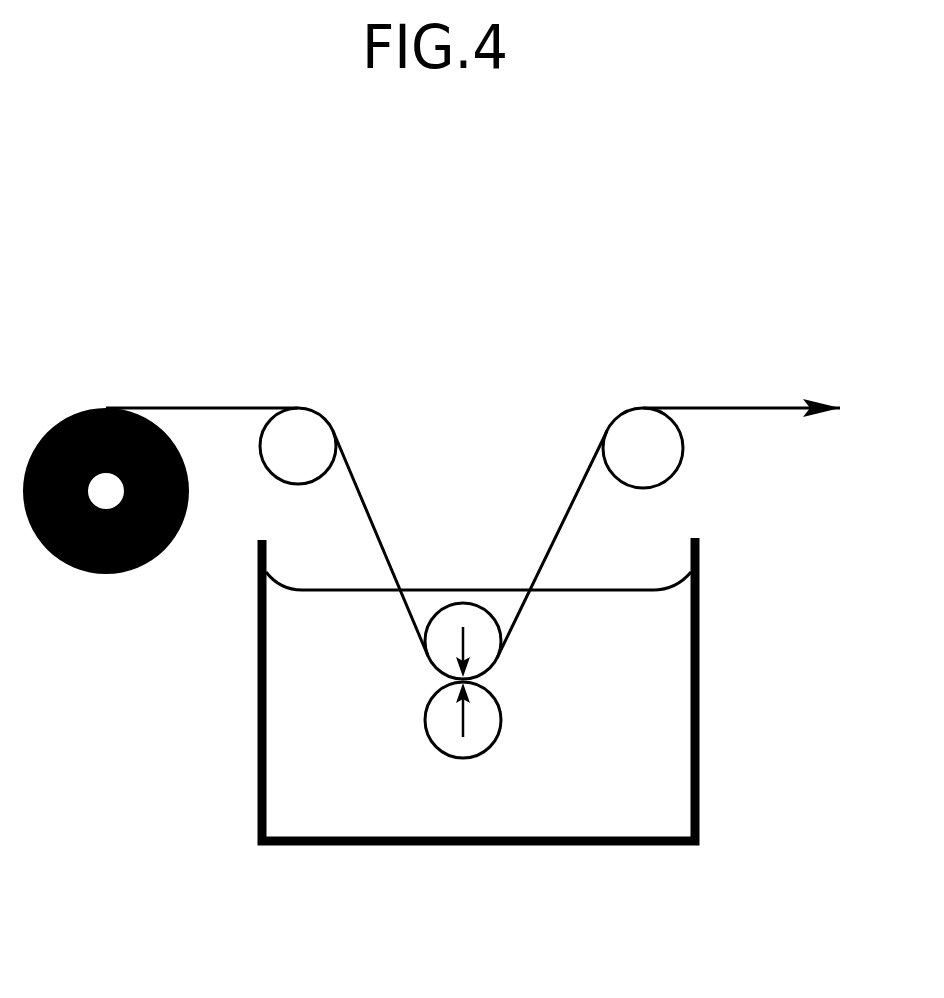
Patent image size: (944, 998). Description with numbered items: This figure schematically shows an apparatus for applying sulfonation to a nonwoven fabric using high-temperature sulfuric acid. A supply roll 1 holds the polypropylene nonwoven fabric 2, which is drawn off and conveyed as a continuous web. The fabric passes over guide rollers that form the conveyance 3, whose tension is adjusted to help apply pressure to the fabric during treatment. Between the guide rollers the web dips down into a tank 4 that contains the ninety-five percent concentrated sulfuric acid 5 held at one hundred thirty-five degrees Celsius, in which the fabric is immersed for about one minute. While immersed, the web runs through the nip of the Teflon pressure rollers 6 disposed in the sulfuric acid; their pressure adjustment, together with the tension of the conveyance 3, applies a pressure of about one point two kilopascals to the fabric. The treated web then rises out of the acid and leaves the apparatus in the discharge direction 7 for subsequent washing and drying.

The supply roll of web 1 is at (48, 437).
The polypropylene nonwoven fabric 2 is at (210, 407).
The tension adjustment of conveyance 3 is at (307, 443).
The treatment tank 4 is at (700, 777).
The concentrated sulfuric acid 5 is at (640, 633).
The Teflon pressure rollers 6 is at (475, 617).
The web transport direction 7 is at (836, 409).